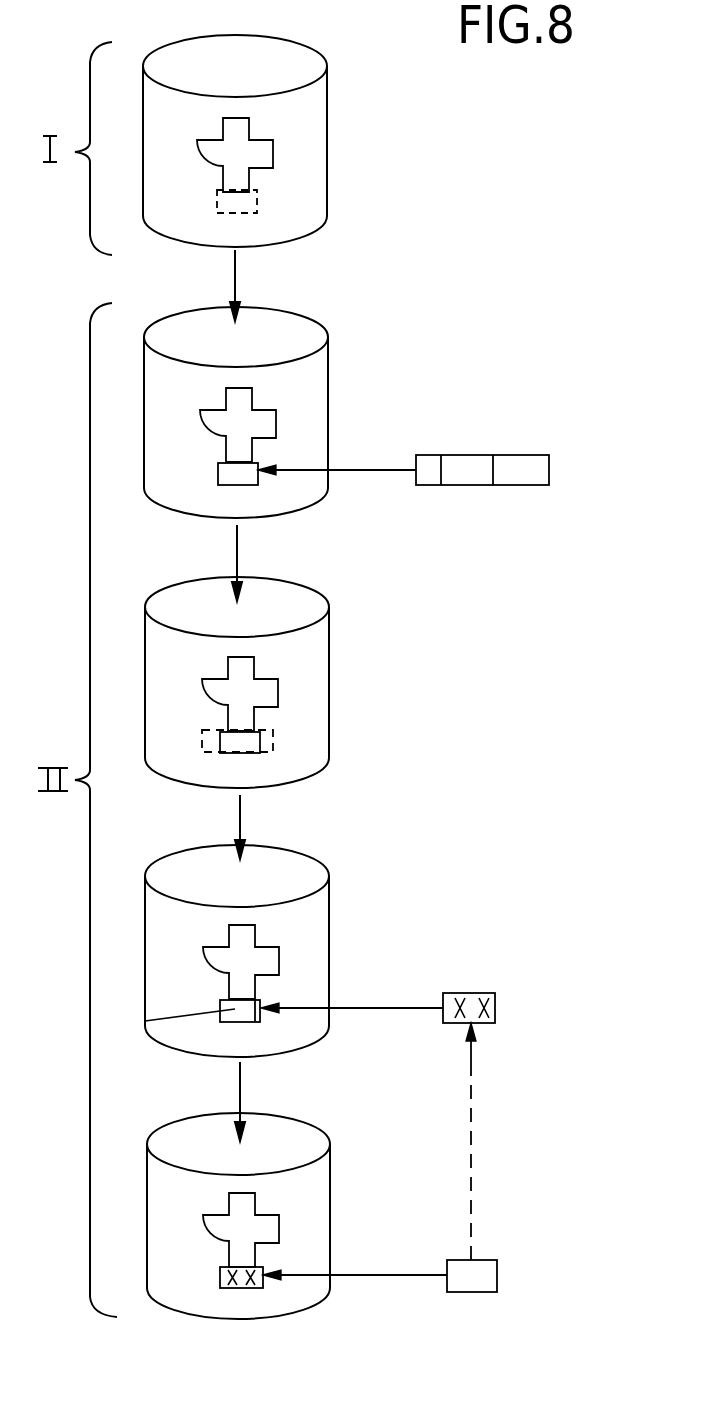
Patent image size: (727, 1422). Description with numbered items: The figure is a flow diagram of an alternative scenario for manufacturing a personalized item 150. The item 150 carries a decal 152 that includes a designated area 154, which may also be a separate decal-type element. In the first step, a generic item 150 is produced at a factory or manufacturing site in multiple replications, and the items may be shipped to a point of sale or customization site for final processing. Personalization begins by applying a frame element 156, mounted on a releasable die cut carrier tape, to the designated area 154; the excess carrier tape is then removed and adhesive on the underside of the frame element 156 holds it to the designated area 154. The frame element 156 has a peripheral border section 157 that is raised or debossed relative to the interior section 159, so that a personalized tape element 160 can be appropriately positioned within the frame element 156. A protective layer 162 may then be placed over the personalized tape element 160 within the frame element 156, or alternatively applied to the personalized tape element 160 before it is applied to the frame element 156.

The personalized item 150 is at (322, 167).
The decal 152 is at (270, 140).
The designated area 154 is at (255, 210).
The frame element 156 is at (470, 452).
The border section 157 is at (225, 1020).
The interior section 159 is at (145, 1021).
The personalized tape element 160 is at (480, 993).
The protective layer 162 is at (490, 1273).